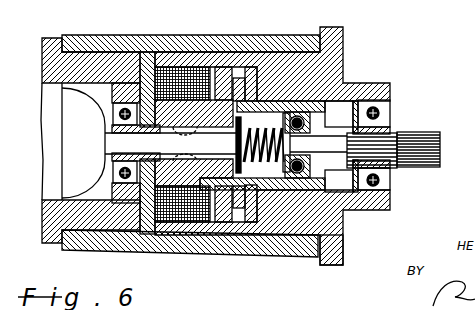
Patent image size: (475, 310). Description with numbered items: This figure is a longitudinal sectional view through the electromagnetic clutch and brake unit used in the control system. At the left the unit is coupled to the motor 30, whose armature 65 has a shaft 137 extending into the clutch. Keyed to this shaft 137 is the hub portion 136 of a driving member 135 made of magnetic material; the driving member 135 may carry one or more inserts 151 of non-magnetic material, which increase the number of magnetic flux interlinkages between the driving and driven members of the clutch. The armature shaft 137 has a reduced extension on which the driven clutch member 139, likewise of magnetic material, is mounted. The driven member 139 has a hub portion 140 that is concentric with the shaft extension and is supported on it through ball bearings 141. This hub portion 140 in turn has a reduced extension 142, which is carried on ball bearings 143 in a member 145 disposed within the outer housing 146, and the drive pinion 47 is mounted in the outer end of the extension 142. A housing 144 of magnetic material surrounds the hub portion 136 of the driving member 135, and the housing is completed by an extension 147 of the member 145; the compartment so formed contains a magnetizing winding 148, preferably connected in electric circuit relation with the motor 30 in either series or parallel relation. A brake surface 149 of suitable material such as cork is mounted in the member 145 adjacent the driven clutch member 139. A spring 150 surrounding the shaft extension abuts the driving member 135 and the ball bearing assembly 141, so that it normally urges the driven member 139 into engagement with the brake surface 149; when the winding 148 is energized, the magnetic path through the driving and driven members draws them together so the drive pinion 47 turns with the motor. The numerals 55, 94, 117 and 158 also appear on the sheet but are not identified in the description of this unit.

The motor 30 is at (60, 22).
The drive pinion 47 is at (428, 133).
The bearing housing 55 is at (260, 25).
The armature 65 is at (47, 178).
The element 94 is at (401, 7).
The element 117 is at (450, 9).
The driving member 135 is at (216, 234).
The hub portion 136 is at (194, 226).
The shaft 137 is at (120, 137).
The driven clutch member 139 is at (243, 236).
The hub portion 140 is at (277, 237).
The ball bearings 141 is at (339, 181).
The reduced extension 142 is at (339, 114).
The ball bearings 143 is at (391, 111).
The housing 144 is at (168, 96).
The member 145 is at (361, 212).
The housing 146 is at (341, 248).
The extension 147 is at (192, 76).
The magnetizing winding 148 is at (175, 223).
The brake surface 149 is at (256, 102).
The spring 150 is at (273, 142).
The inserts 151 is at (226, 92).
The plunger rod 158 is at (298, 158).